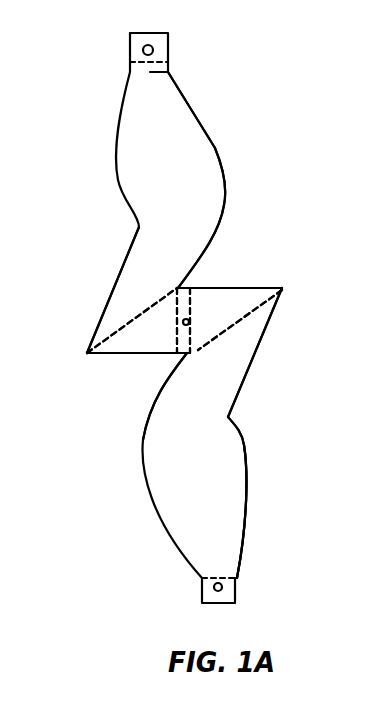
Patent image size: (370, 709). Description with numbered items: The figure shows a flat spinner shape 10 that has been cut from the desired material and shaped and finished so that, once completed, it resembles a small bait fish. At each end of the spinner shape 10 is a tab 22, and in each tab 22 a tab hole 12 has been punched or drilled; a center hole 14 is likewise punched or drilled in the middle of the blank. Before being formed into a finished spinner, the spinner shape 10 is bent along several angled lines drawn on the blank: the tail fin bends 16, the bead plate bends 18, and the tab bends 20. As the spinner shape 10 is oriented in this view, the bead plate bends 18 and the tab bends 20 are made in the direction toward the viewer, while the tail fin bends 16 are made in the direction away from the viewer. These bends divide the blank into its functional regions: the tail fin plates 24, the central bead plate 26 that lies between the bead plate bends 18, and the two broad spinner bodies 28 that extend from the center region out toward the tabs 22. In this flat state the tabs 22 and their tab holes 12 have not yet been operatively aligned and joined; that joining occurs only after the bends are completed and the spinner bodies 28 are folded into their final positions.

The spinner shape 10 is at (131, 500).
The tab holes 12 is at (157, 49).
The center hole 14 is at (186, 319).
The tail fin bends 16 is at (136, 318).
The bead plate bends 18 is at (189, 330).
The tab bends 20 is at (200, 82).
The tabs 22 is at (168, 62).
The tail fin plates 24 is at (243, 296).
The bead plate 26 is at (172, 352).
The spinner bodies 28 is at (208, 180).